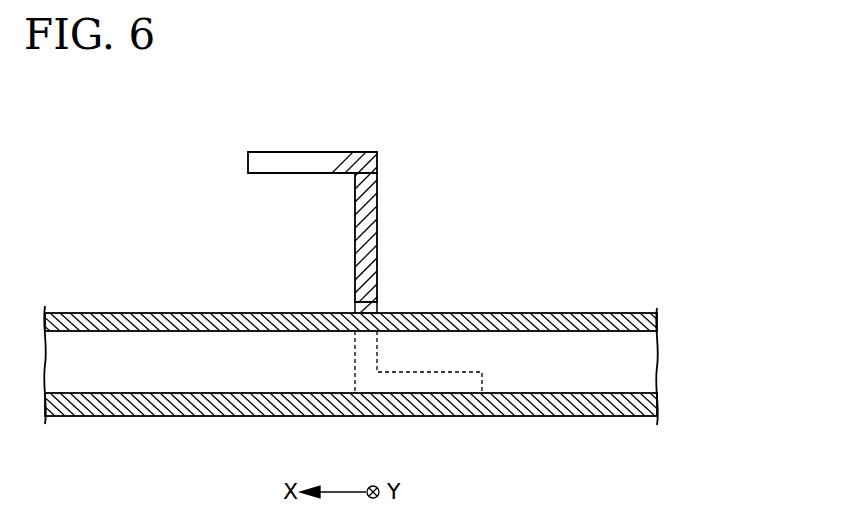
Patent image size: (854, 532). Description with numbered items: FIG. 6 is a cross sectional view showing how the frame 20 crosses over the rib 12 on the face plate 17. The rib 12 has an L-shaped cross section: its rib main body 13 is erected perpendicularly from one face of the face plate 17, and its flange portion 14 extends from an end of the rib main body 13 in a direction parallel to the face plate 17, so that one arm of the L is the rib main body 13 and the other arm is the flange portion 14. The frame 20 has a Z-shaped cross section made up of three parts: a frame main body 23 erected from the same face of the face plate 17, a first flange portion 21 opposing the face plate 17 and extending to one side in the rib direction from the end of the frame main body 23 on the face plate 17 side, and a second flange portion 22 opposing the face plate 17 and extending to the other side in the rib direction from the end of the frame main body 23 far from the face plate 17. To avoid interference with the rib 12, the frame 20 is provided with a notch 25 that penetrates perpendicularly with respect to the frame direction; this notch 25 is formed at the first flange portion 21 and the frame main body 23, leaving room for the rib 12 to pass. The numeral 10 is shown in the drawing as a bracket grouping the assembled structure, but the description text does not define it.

The wiring substrate 10 is at (434, 363).
The rib 12 is at (415, 344).
The rib main body 13 is at (399, 362).
The flange portion 14 is at (648, 323).
The face plate 17 is at (638, 408).
The frame 20 is at (329, 269).
The first flange portion 21 is at (412, 372).
The second flange portion 22 is at (262, 161).
The frame main body 23 is at (365, 220).
The notch 25 is at (376, 310).